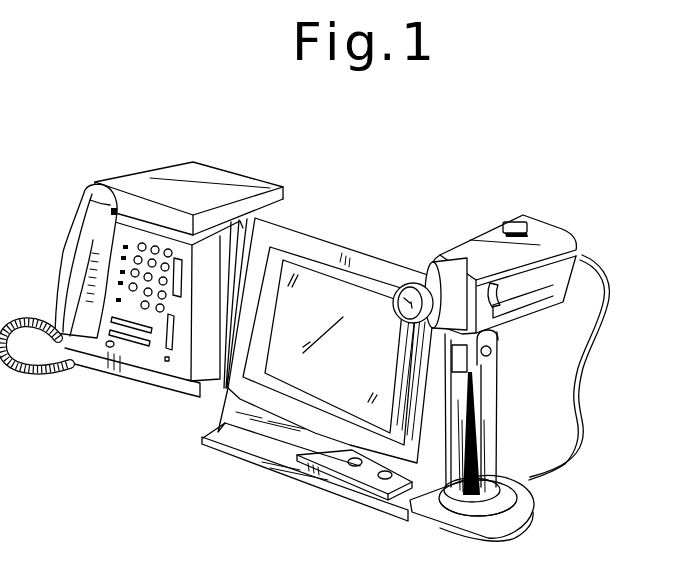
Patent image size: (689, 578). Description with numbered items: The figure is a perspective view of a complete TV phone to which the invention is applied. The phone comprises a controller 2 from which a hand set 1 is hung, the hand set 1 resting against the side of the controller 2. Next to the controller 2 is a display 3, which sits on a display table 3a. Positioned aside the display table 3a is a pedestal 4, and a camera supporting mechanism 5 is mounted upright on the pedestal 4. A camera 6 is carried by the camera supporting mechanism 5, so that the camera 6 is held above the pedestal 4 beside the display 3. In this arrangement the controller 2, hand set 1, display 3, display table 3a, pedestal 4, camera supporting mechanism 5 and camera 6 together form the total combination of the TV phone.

The hand set 1 is at (72, 222).
The controller 2 is at (204, 166).
The display 3 is at (373, 254).
The display table 3a is at (309, 487).
The pedestal 4 is at (523, 507).
The camera supporting mechanism 5 is at (512, 387).
The camera 6 is at (569, 228).